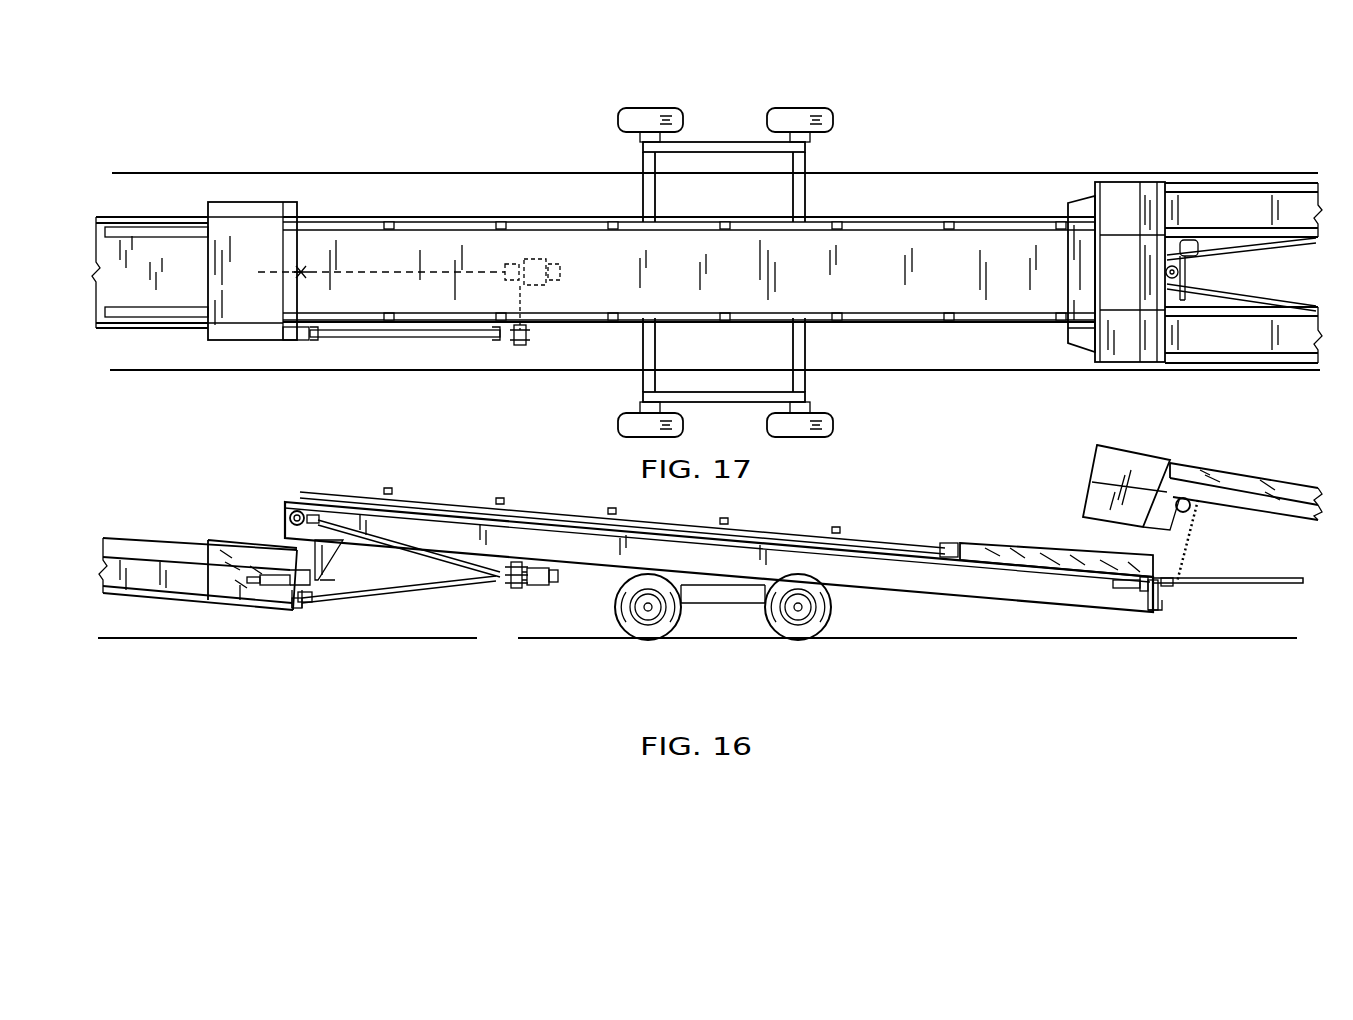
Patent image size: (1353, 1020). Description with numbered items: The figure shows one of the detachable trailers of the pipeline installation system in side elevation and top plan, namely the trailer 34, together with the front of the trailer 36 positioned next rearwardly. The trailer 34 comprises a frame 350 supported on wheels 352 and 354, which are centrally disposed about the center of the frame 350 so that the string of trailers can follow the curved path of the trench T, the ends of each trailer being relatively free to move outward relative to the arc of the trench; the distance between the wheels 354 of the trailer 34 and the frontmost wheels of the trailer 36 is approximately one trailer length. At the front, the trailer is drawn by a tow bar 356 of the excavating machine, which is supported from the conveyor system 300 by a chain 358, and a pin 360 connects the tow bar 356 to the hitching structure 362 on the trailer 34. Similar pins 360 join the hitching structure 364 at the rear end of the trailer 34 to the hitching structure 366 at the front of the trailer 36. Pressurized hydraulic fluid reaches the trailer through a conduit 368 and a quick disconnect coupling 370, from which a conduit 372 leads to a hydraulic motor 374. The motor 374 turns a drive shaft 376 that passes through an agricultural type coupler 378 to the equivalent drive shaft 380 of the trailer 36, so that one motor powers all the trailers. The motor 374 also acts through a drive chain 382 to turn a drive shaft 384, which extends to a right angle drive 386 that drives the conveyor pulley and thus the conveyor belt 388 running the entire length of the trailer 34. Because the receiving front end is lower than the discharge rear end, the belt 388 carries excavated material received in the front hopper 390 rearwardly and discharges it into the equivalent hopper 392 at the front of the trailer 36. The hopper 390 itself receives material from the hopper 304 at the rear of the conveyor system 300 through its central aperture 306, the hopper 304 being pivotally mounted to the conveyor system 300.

In FIG. 17, the trailer 34 is at (944, 108).
In FIG. 16, the trailer 34 is at (436, 470).
In FIG. 17, the trailer 36 is at (157, 192).
In FIG. 16, the trailer 36 is at (128, 525).
In FIG. 17, the trench T is at (126, 353).
In FIG. 17, the conveyor system 300 is at (1252, 272).
In FIG. 16, the conveyor system 300 is at (1318, 476).
In FIG. 17, the hopper 304 is at (1115, 208).
In FIG. 16, the hopper 304 is at (1118, 455).
In FIG. 16, the central aperture 306 is at (1100, 523).
In FIG. 16, the frame 350 is at (870, 576).
In FIG. 17, the wheels 352 is at (800, 108).
In FIG. 16, the wheels 352 is at (808, 641).
In FIG. 17, the wheels 354 is at (662, 108).
In FIG. 16, the wheels 354 is at (645, 641).
In FIG. 16, the tow bar 356 is at (1265, 588).
In FIG. 16, the chain 358 is at (1200, 530).
In FIG. 16, the pin 360 is at (1172, 577).
In FIG. 16, the hitching structure 362 is at (1160, 600).
In FIG. 16, the hitching structure 364 is at (290, 572).
In FIG. 16, the hitching structure 366 is at (313, 598).
In FIG. 16, the conduit 368 is at (1174, 587).
In FIG. 16, the quick disconnect coupling 370 is at (1158, 622).
In FIG. 16, the conduit 372 is at (556, 574).
In FIG. 17, the hydraulic motor 374 is at (545, 262).
In FIG. 16, the hydraulic motor 374 is at (545, 585).
In FIG. 17, the drive shaft 376 is at (400, 268).
In FIG. 16, the drive shaft 376 is at (436, 594).
In FIG. 16, the agricultural type coupler 378 is at (297, 610).
In FIG. 17, the drive shaft 380 is at (258, 268).
In FIG. 17, the drive chain 382 is at (522, 302).
In FIG. 16, the drive chain 382 is at (518, 590).
In FIG. 17, the drive shaft 384 is at (397, 340).
In FIG. 16, the drive shaft 384 is at (410, 540).
In FIG. 17, the right angle drive 386 is at (302, 340).
In FIG. 16, the right angle drive 386 is at (301, 511).
In FIG. 17, the conveyor belt 388 is at (592, 286).
In FIG. 16, the conveyor belt 388 is at (814, 536).
In FIG. 17, the hopper 390 is at (1080, 205).
In FIG. 16, the hopper 390 is at (1076, 549).
In FIG. 17, the hopper 392 is at (249, 202).
In FIG. 16, the hopper 392 is at (218, 556).